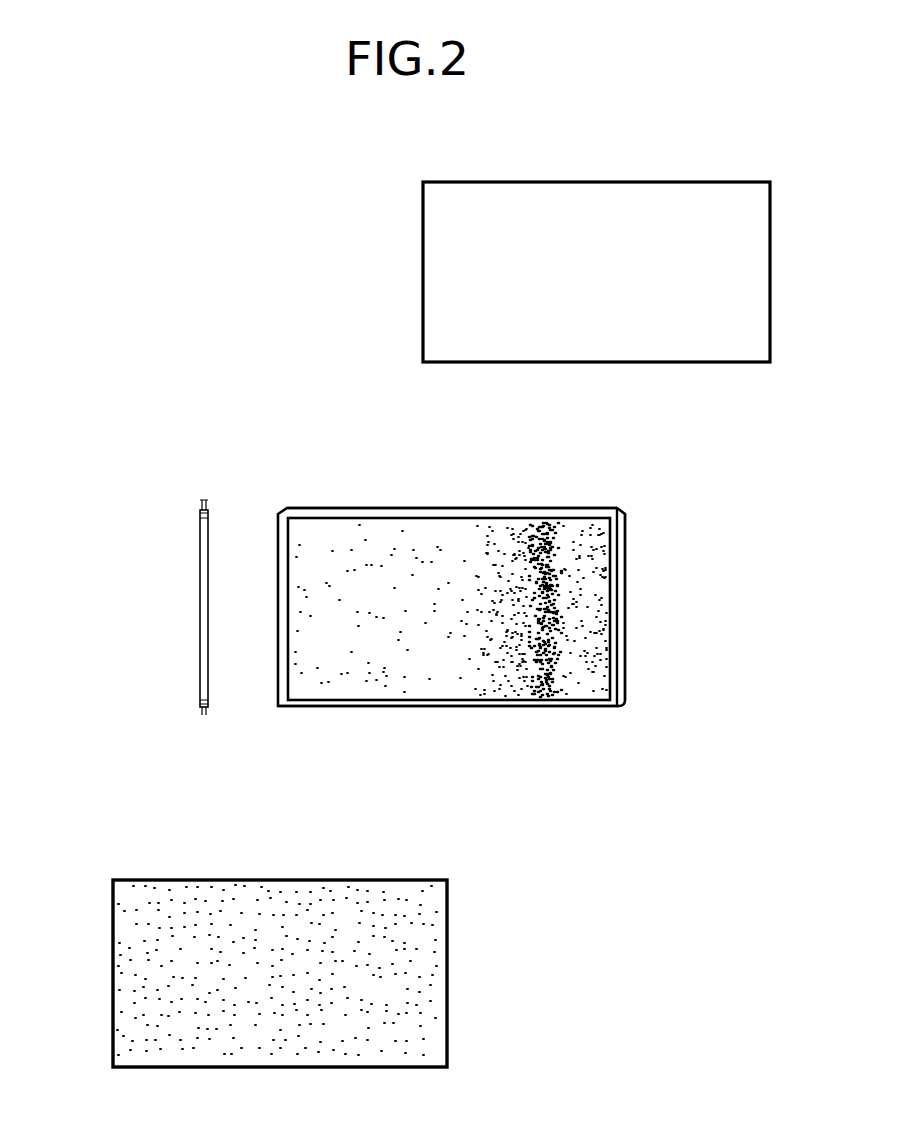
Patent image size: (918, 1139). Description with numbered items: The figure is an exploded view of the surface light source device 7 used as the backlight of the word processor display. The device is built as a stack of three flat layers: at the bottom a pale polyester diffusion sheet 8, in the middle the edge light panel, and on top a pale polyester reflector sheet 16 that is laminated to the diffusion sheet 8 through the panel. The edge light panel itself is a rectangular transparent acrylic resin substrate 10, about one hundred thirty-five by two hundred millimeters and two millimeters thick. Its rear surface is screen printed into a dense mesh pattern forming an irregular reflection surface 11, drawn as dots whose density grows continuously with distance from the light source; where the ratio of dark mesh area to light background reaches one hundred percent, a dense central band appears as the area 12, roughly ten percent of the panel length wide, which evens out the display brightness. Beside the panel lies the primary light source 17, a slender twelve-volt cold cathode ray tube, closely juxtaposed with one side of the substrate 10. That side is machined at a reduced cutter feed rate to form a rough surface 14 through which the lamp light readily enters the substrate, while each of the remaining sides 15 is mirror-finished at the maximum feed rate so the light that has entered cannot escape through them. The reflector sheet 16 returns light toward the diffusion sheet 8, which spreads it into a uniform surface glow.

The surface light source device 7 is at (500, 611).
The diffusion sheet 8 is at (449, 990).
The substrate 10 is at (598, 677).
The irregular reflection surface 11 is at (342, 527).
The 100% ratio area 12 is at (544, 578).
The rough surface 14 is at (278, 532).
The remaining sides 15 is at (577, 506).
The reflector sheet 16 is at (771, 286).
The primary light source 17 is at (198, 647).